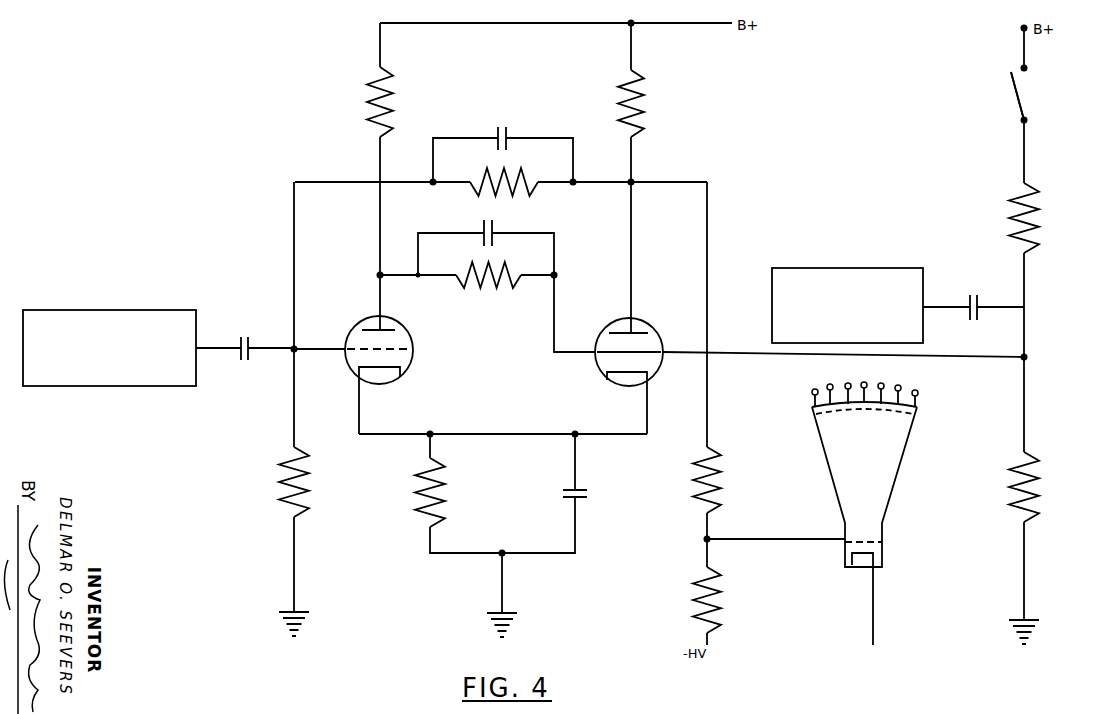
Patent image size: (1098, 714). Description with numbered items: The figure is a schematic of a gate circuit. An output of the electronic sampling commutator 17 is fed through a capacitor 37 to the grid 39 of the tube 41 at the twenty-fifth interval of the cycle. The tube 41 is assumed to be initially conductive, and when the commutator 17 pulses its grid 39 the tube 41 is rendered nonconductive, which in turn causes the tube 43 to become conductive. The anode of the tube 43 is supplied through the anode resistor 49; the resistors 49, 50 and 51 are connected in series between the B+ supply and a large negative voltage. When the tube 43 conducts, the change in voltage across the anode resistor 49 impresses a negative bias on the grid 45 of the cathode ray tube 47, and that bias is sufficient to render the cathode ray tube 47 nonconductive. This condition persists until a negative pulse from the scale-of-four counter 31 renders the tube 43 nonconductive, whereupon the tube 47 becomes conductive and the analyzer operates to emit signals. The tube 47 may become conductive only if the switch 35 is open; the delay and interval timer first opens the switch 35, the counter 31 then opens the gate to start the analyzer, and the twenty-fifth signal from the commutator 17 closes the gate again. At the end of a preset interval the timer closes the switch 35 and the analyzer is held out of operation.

The electronic sampling commutator 17 is at (106, 310).
The capacitor 37 is at (248, 337).
The tube 41 is at (397, 322).
The grid 39 is at (395, 349).
The tube 43 is at (641, 323).
The anode resistor 49 is at (641, 100).
The scale-of-four counter 31 is at (848, 268).
The switch 35 is at (1020, 100).
The cathode ray tube 47 is at (877, 456).
The grid 45 is at (868, 538).
The resistor 50 is at (715, 477).
The resistor 51 is at (715, 600).